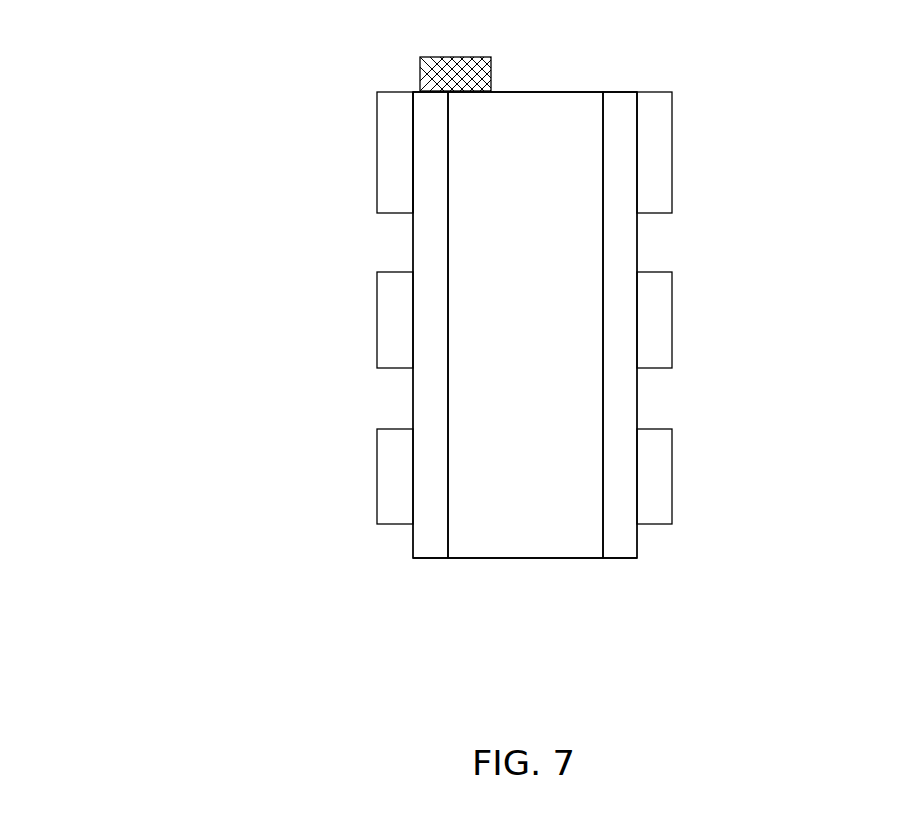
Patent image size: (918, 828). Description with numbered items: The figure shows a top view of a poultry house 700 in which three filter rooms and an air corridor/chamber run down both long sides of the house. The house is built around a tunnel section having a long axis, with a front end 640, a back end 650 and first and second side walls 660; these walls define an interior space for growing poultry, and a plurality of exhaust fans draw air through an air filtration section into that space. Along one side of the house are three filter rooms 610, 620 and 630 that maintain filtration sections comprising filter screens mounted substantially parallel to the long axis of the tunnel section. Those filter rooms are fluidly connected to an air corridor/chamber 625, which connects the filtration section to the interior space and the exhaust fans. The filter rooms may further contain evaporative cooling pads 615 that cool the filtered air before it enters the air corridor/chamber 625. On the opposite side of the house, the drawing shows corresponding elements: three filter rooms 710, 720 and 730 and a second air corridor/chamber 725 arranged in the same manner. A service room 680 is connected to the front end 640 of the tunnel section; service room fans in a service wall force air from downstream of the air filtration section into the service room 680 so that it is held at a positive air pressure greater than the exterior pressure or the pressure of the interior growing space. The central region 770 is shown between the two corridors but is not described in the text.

The poultry house 700 is at (525, 380).
The filter room 610 is at (375, 143).
The filter room 620 is at (365, 320).
The filter room 630 is at (363, 476).
The evaporative cooling pads 615 is at (412, 107).
The air corridor/chamber 625 is at (429, 238).
The front end 640 is at (525, 108).
The back end 650 is at (525, 545).
The side walls 660 is at (525, 325).
The service room 680 is at (495, 74).
The filter room 710 is at (682, 152).
The filter room 720 is at (686, 320).
The filter room 730 is at (686, 476).
The air corridor/chamber 725 is at (620, 325).
The central chamber 770 is at (525, 325).